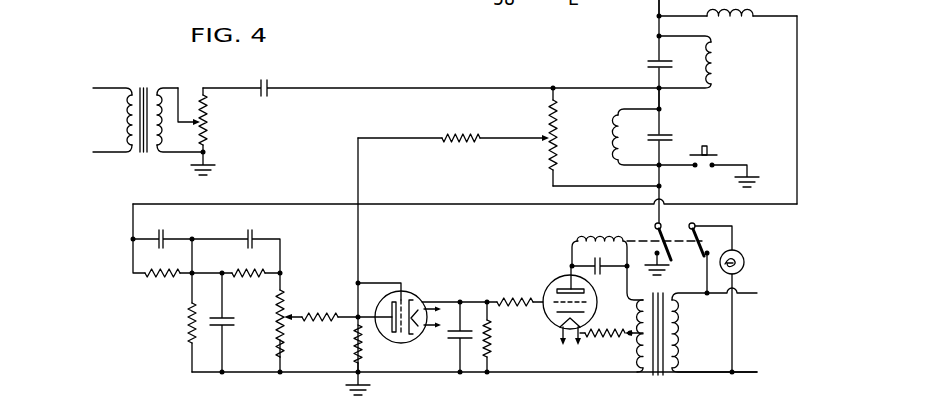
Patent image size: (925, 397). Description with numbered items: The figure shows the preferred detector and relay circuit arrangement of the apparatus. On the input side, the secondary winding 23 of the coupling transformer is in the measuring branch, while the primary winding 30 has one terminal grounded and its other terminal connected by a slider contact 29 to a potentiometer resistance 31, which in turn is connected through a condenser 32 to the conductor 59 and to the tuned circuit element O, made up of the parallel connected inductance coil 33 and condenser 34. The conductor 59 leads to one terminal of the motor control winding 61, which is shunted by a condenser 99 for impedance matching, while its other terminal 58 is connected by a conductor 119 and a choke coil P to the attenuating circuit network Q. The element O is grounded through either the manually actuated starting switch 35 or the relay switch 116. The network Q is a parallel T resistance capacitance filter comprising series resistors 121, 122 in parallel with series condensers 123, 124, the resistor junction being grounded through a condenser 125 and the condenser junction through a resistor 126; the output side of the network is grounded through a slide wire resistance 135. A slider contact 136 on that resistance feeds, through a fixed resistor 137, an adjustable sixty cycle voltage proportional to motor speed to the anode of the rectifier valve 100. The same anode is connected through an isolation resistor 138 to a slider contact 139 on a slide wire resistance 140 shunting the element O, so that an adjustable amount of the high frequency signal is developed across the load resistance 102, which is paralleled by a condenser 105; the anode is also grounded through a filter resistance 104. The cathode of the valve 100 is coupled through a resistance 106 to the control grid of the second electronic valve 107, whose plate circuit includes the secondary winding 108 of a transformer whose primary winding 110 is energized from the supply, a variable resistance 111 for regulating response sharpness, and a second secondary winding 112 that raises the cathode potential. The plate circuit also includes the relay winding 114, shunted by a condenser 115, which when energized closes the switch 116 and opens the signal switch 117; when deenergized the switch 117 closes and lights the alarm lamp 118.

The secondary winding 23 is at (128, 117).
The slider contact 29 is at (181, 112).
The primary winding 30 is at (163, 128).
The potentiometer resistance 31 is at (207, 130).
The condenser 32 is at (268, 81).
The inductance coil 33 is at (622, 140).
The condenser 34 is at (673, 140).
The manually actuated starting switch 35 is at (715, 153).
The motor terminal 58 is at (661, 15).
The conductor 59 is at (660, 97).
The control winding 61 is at (705, 62).
The condenser 99 is at (647, 62).
The electronic valve 100 is at (406, 296).
The resistance 102 is at (492, 340).
The resistance 104 is at (355, 345).
The condenser 105 is at (453, 341).
The resistance 106 is at (505, 312).
The second electronic valve 107 is at (560, 288).
The secondary winding 108 is at (644, 312).
The primary winding 110 is at (678, 345).
The variable resistance 111 is at (616, 325).
The secondary winding 112 is at (643, 352).
The relay winding 114 is at (590, 238).
The condenser 115 is at (572, 241).
The relay switch 116 is at (666, 244).
The signal switch 117 is at (703, 259).
The electric lamp 118 is at (744, 262).
The conductor 119 is at (797, 90).
The resistor 121 is at (160, 279).
The resistor 122 is at (240, 268).
The condenser 123 is at (165, 237).
The condenser 124 is at (256, 237).
The condenser 125 is at (226, 333).
The resistor 126 is at (190, 328).
The slide wire resistance 135 is at (286, 294).
The slider contact 136 is at (287, 338).
The fixed resistor 137 is at (308, 312).
The isolation resistor 138 is at (458, 133).
The slider contact 139 is at (547, 142).
The slide wire resistance 140 is at (557, 135).
The choke coil P is at (731, 20).
The tuned circuit element O is at (602, 158).
The attenuating circuit network Q is at (147, 309).